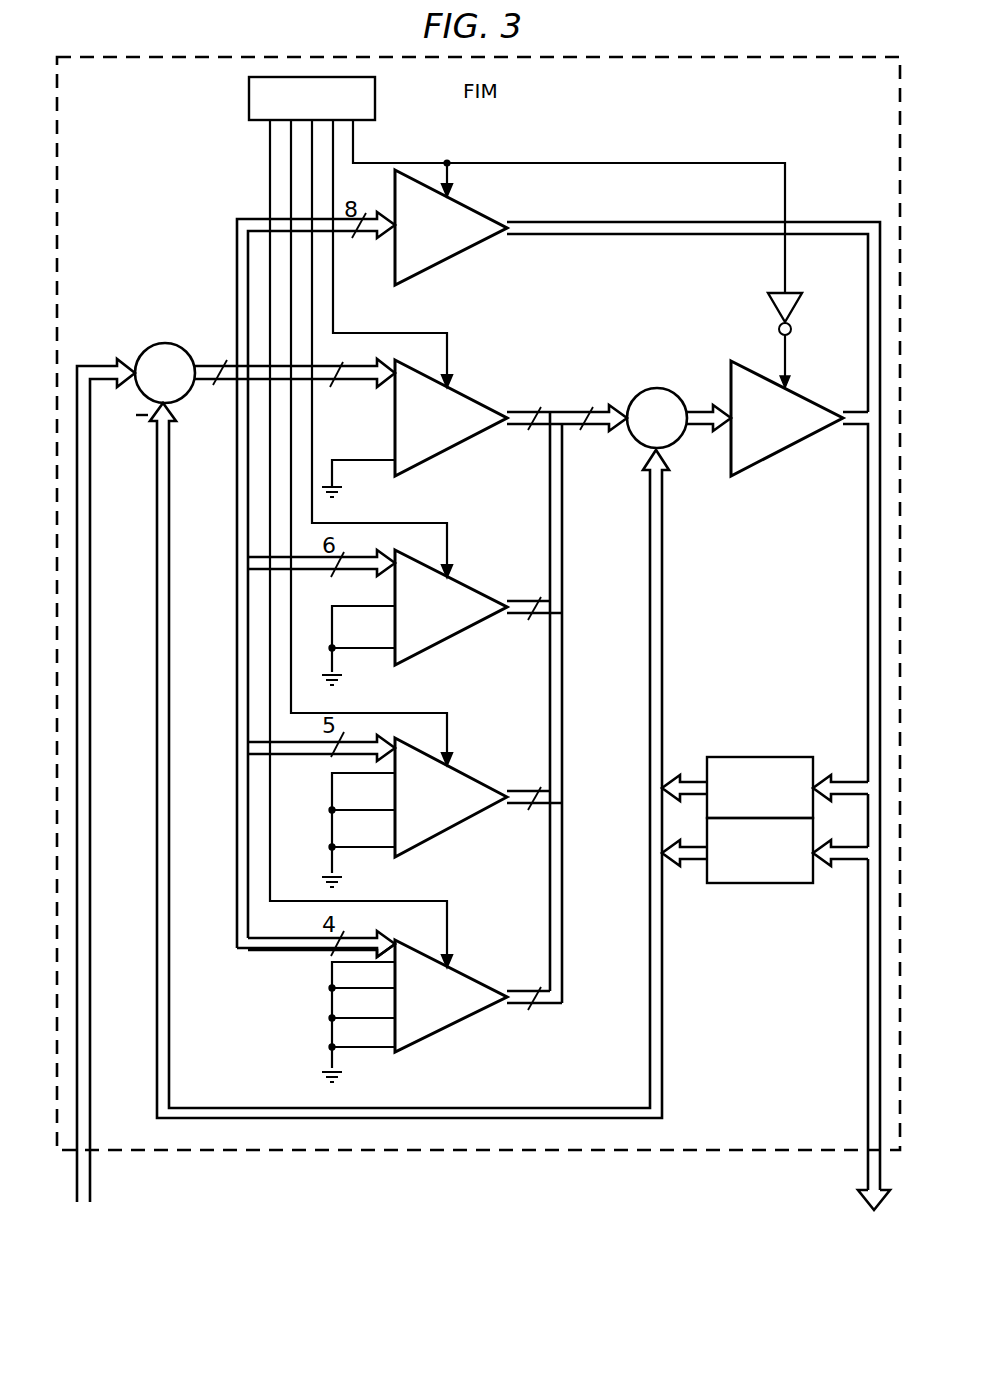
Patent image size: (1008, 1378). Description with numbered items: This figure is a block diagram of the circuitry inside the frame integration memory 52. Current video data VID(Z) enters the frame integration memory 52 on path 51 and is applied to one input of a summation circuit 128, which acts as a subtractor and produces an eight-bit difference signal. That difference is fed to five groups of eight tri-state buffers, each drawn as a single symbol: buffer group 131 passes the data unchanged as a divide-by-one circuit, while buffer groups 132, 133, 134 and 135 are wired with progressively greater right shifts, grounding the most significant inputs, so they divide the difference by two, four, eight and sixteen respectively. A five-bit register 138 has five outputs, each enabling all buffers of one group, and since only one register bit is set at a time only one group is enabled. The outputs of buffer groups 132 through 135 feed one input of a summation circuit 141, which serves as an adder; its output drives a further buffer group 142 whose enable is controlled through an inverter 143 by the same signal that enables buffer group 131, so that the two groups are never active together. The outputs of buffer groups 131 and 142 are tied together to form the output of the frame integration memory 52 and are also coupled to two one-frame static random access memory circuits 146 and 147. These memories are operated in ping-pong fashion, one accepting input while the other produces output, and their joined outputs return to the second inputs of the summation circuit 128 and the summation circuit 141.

The frame integration memory 52 is at (697, 57).
The five-bit register 138 is at (249, 100).
The path 51 is at (88, 1160).
The summation circuit 128 is at (165, 343).
The buffer group 131 is at (455, 256).
The buffer group 132 is at (455, 446).
The buffer group 133 is at (455, 634).
The buffer group 134 is at (455, 824).
The buffer group 135 is at (455, 1024).
The summation circuit 141 is at (657, 388).
The buffer group 142 is at (790, 447).
The inverter 143 is at (800, 310).
The static random access memory circuit 146 is at (760, 757).
The static random access memory circuit 147 is at (760, 883).